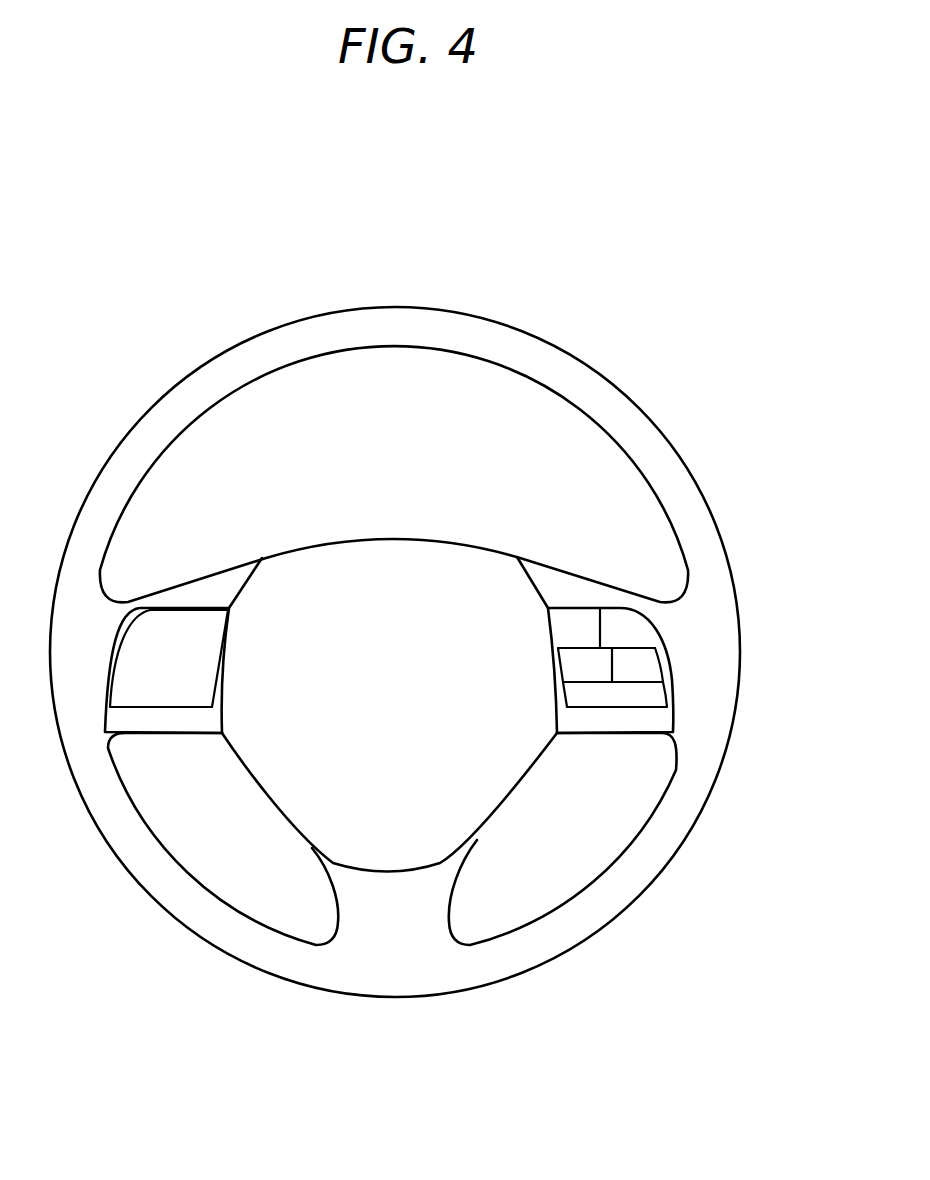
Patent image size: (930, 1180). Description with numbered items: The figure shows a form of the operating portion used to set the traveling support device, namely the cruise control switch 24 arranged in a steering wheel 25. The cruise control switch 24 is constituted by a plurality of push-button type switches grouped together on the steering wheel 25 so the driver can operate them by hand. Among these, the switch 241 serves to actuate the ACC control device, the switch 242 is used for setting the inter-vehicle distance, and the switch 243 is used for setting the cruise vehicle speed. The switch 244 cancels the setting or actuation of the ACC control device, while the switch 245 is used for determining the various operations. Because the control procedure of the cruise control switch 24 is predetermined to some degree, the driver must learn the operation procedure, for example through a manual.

The steering wheel 25 is at (403, 325).
The cruise control switch 24 is at (635, 647).
The switch 241 is at (575, 668).
The switch 242 is at (617, 700).
The switch 243 is at (643, 662).
The switch 244 is at (573, 632).
The switch 245 is at (632, 632).